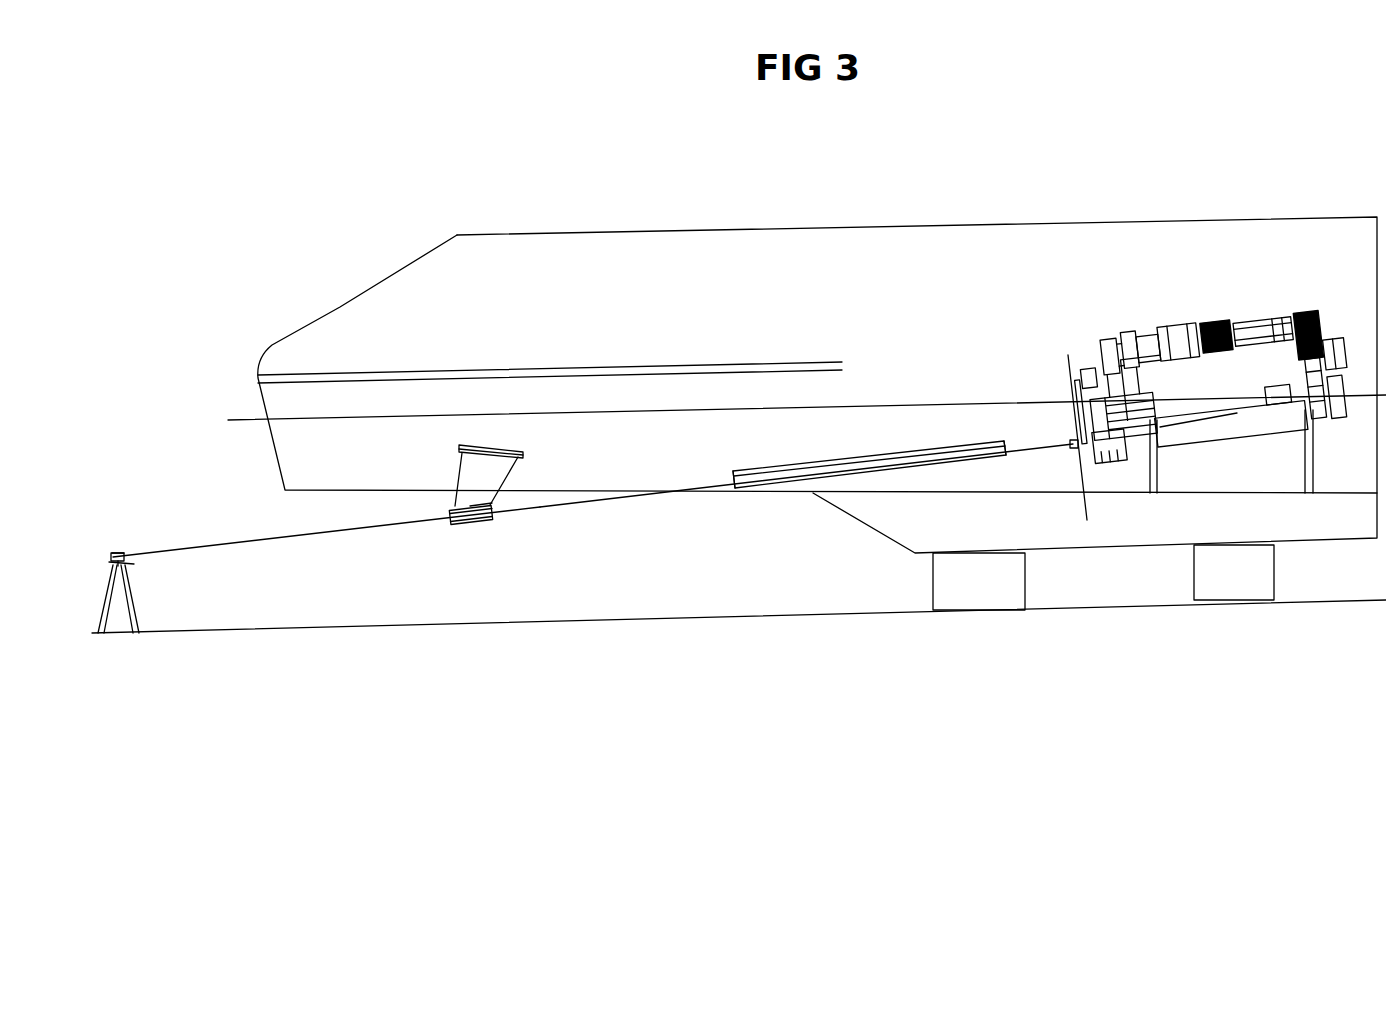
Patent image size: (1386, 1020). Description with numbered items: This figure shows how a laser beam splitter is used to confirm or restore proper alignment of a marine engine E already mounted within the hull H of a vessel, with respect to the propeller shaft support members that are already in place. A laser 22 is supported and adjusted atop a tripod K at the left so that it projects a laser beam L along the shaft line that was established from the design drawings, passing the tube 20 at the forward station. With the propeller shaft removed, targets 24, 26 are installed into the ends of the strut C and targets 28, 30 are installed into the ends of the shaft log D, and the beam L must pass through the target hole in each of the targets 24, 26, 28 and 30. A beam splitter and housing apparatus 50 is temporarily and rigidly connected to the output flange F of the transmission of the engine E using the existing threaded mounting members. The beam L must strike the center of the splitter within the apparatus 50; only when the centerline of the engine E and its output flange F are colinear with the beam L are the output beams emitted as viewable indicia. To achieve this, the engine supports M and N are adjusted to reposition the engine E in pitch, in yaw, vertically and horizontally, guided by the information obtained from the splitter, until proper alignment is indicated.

The hull H is at (877, 533).
The tripod K is at (131, 593).
The tube 20 is at (127, 564).
The laser 22 is at (118, 553).
The laser beam L is at (562, 507).
The strut C is at (472, 522).
The target 24 is at (450, 512).
The target 26 is at (494, 524).
The shaft log D is at (851, 458).
The target 28 is at (730, 488).
The target 30 is at (1008, 447).
The engine E is at (1222, 310).
The engine support M is at (1157, 466).
The engine support N is at (1312, 462).
The output flange F is at (1085, 455).
The beam splitter/housing assembly 50 is at (1070, 452).